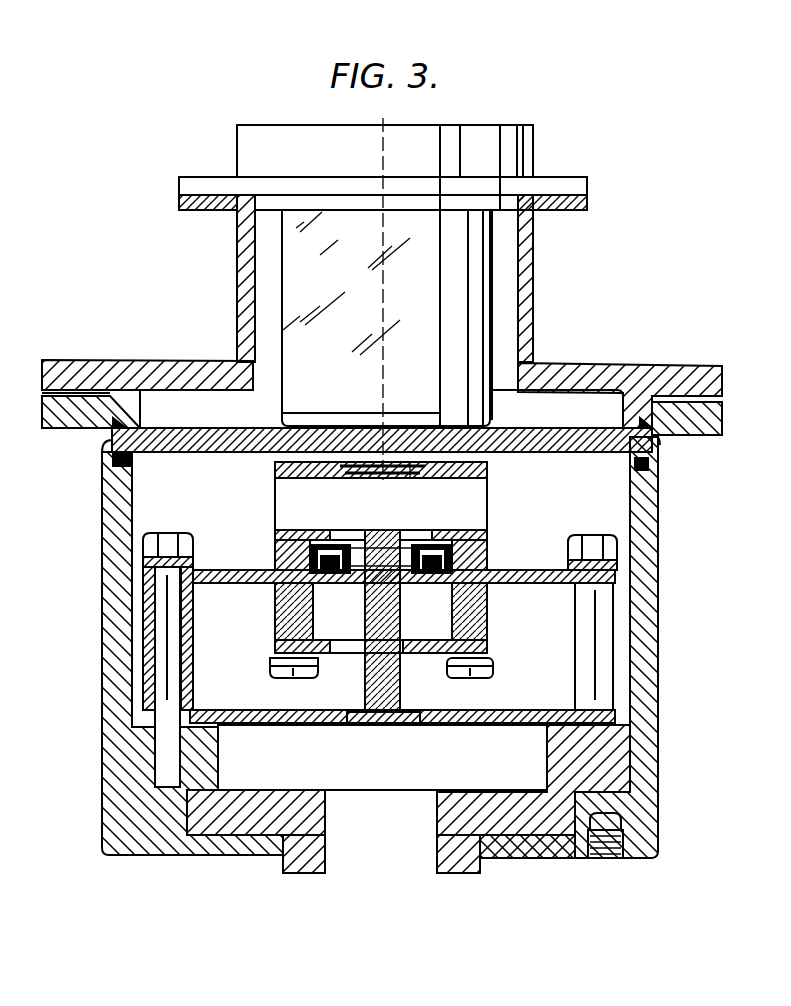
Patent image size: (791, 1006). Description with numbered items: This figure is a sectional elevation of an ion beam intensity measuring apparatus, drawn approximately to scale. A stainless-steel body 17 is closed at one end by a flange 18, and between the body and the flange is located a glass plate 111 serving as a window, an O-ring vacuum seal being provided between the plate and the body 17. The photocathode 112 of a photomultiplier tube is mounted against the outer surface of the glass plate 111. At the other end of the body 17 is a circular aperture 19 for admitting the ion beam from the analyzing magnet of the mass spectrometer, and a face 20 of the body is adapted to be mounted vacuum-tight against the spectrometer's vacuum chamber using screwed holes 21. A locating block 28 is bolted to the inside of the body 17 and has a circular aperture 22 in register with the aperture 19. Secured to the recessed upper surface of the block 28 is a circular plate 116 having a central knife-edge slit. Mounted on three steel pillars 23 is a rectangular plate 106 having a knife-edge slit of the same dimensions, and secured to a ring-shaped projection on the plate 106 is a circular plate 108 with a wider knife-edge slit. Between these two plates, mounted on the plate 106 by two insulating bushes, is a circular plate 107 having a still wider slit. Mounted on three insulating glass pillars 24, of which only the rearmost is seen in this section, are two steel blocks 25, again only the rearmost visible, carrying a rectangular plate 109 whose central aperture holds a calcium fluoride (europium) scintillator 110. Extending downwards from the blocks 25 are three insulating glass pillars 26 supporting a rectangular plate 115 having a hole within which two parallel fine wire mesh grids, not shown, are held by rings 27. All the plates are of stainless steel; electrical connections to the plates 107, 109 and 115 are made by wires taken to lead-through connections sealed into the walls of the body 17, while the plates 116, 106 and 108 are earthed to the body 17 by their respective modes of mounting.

The stainless-steel body 17 is at (642, 657).
The flange 18 is at (614, 372).
The circular aperture 19 is at (337, 874).
The face 20 is at (513, 860).
The screwed holes 21 is at (603, 860).
The circular aperture 22 is at (335, 806).
The steel pillars 23 is at (188, 628).
The insulating glass pillars 24 is at (304, 599).
The steel blocks 25 is at (276, 497).
The insulating glass pillars 26 is at (474, 613).
The rings 27 is at (364, 636).
The locating block 28 is at (238, 817).
The rectangular plate 106 is at (490, 576).
The circular plate 107 is at (300, 535).
The circular plate 108 is at (488, 541).
The rectangular plate 109 is at (488, 470).
The scintillator 110 is at (385, 465).
The glass plate 111 is at (634, 450).
The photocathode 112 is at (387, 428).
The rectangular plate 115 is at (484, 648).
The circular plate 116 is at (251, 710).